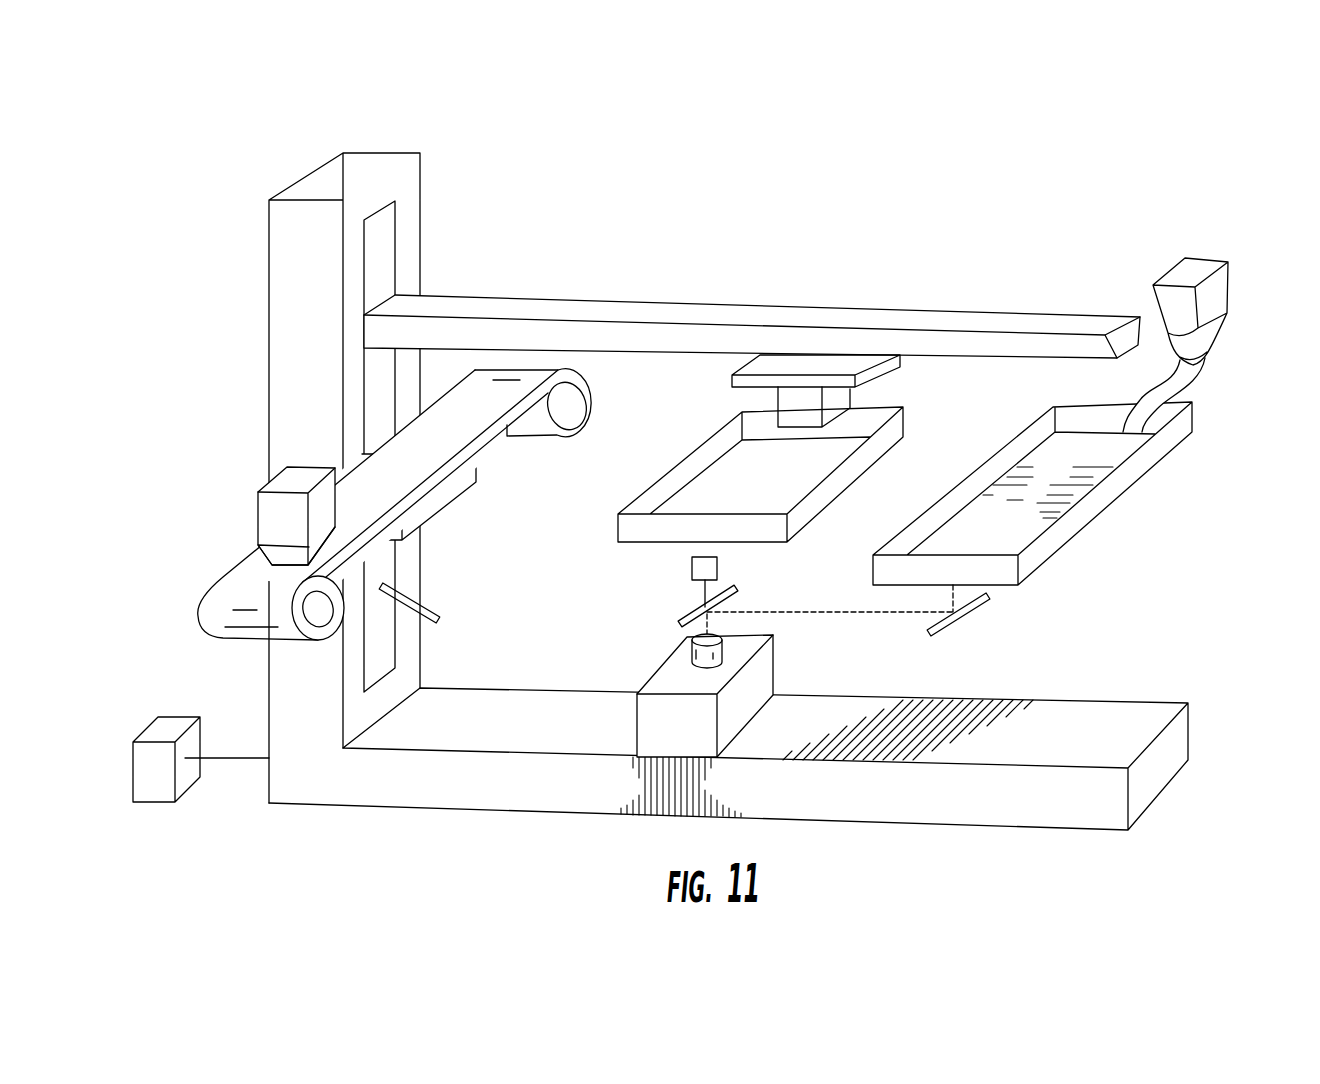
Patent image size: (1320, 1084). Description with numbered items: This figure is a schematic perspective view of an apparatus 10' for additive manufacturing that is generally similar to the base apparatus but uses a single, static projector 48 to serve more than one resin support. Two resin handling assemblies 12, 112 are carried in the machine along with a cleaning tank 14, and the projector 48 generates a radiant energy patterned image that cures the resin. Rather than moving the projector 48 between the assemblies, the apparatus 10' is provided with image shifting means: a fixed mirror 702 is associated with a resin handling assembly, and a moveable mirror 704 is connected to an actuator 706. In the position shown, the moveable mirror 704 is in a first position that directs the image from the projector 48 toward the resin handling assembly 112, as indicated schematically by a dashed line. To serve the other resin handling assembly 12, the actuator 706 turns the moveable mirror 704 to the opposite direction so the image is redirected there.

The apparatus 10' is at (702, 461).
The resin handling assembly 12 is at (505, 538).
The cleaning tank 14 is at (828, 491).
The projector 48 is at (660, 723).
The resin handling assembly 112 is at (1132, 508).
The fixed mirror 702 is at (438, 614).
The moveable mirror 704 is at (690, 613).
The actuator 706 is at (692, 566).